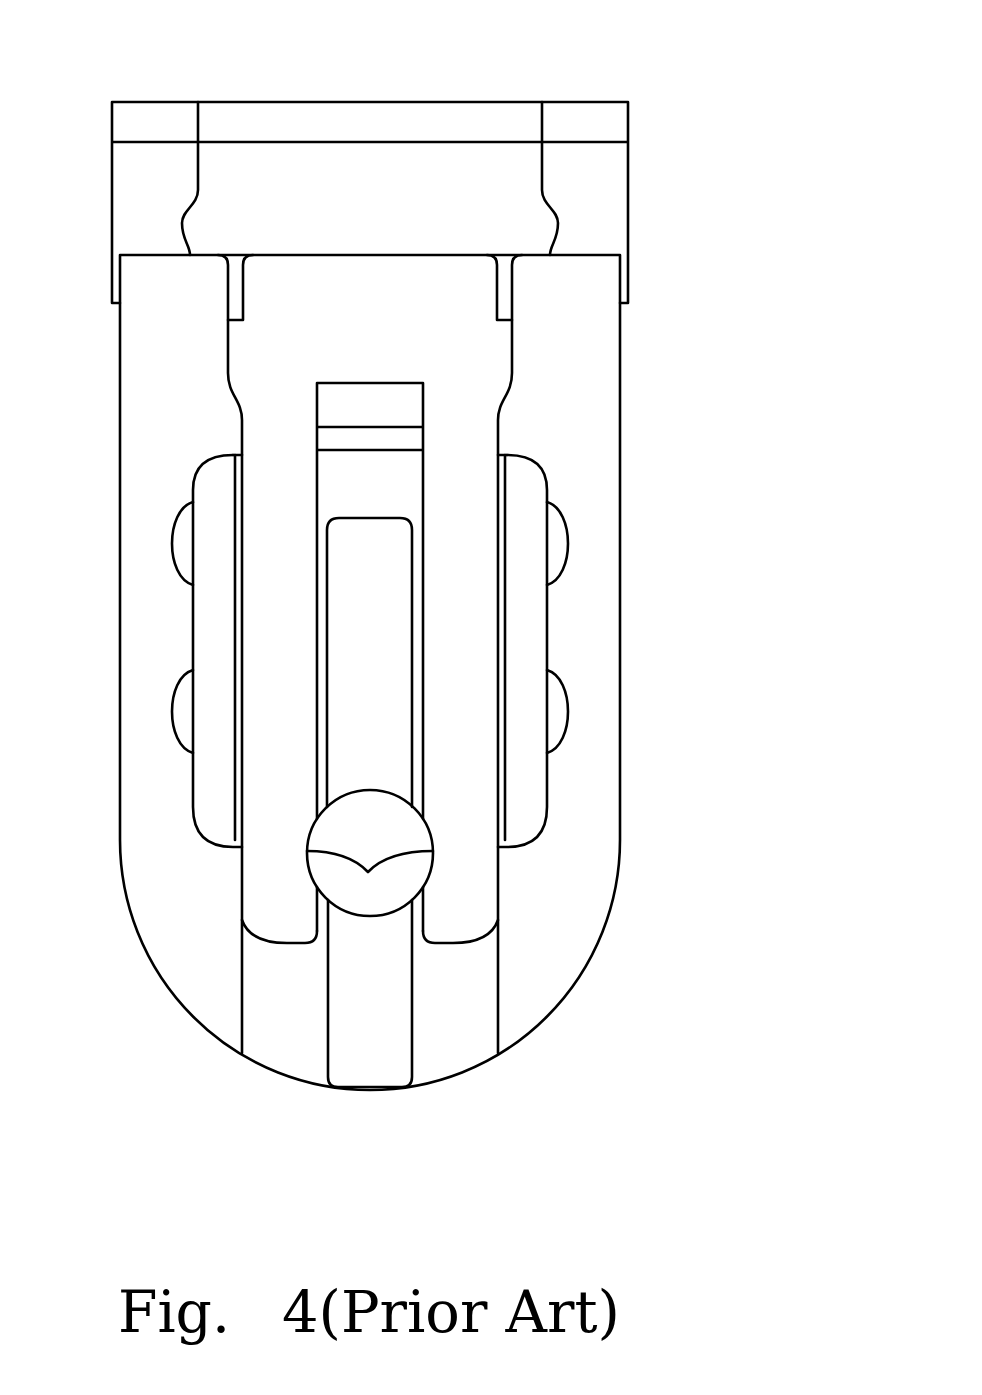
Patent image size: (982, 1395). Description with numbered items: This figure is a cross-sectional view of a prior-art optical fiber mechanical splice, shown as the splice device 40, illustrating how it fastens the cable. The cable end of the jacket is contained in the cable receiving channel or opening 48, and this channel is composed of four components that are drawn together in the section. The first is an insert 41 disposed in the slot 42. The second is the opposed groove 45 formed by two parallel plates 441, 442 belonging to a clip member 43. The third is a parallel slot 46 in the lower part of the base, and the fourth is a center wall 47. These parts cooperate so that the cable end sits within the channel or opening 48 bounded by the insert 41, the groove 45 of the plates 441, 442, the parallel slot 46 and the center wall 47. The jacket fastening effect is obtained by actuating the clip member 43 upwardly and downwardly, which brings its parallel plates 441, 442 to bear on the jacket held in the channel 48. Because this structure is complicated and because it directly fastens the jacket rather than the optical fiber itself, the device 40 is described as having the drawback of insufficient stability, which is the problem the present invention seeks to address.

The splice device 40 is at (685, 492).
The insert 41 is at (547, 637).
The slot 42 is at (622, 380).
The clip member 43 is at (350, 285).
The parallel plate 441 is at (453, 903).
The parallel plate 442 is at (275, 918).
The opposed groove 45 is at (370, 886).
The parallel slot 46 is at (368, 1070).
The center wall 47 is at (358, 528).
The cable receiving channel 48 is at (355, 792).